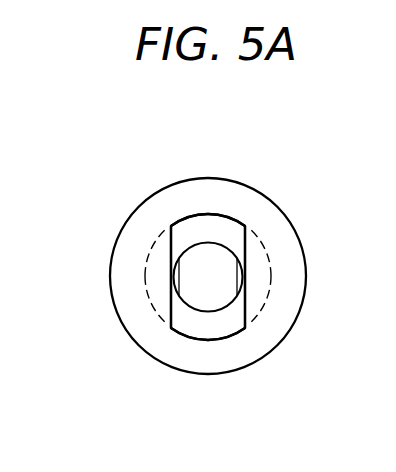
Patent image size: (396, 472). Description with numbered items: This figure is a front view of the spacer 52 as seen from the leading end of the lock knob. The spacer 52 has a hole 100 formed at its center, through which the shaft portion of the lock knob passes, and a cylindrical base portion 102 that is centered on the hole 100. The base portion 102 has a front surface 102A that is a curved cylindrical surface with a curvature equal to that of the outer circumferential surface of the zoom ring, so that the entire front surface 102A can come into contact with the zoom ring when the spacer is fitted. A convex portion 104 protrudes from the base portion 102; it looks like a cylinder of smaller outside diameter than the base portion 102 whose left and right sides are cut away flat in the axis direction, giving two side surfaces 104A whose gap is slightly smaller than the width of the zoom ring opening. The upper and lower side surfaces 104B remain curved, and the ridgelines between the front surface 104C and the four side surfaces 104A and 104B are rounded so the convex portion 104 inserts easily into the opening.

The spacer 52 is at (142, 188).
The hole 100 is at (225, 265).
The base portion 102 is at (263, 357).
The front surface 102A is at (162, 342).
The convex portion 104 is at (211, 281).
The side surfaces 104A is at (171, 242).
The side surfaces 104B is at (193, 214).
The front surface 104C is at (235, 312).